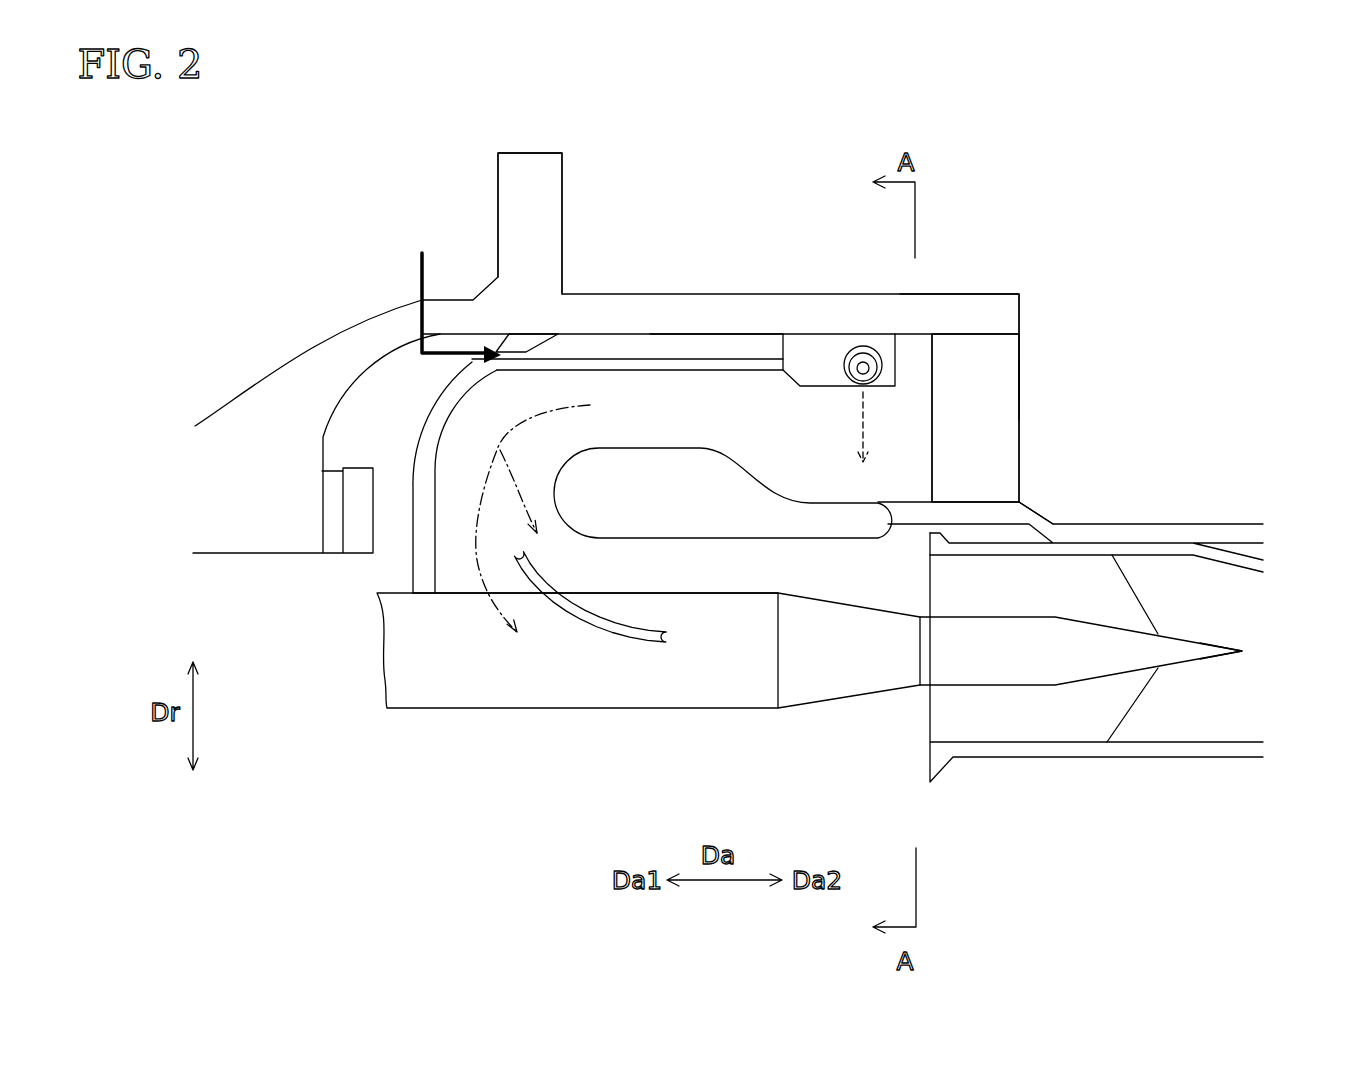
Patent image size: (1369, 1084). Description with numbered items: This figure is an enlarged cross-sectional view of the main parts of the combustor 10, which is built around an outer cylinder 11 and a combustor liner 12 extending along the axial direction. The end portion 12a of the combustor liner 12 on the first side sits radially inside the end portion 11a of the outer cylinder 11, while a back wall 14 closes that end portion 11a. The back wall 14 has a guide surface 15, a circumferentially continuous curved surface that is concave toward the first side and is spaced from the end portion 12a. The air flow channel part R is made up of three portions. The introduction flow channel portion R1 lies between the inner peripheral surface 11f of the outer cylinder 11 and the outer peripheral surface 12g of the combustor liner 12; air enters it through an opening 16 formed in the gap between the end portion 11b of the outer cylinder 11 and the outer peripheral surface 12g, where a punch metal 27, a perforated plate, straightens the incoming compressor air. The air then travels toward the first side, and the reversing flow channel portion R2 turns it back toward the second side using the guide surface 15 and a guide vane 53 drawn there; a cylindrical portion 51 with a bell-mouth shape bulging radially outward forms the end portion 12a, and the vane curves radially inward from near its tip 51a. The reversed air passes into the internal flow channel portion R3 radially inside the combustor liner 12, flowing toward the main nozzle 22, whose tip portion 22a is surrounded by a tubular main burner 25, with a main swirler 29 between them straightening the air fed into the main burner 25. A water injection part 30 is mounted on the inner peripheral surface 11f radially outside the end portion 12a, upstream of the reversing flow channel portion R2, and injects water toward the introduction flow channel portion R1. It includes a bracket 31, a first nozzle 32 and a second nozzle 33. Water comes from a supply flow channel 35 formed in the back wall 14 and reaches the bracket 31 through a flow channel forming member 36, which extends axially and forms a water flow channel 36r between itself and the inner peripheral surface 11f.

The combustor 10 is at (343, 232).
The outer cylinder 11 is at (697, 294).
The end portion of the outer cylinder on the first side 11a is at (575, 293).
The end portion of the outer cylinder on the second side 11b is at (1017, 295).
The inner peripheral surface of the outer cylinder 11f is at (743, 337).
The combustor liner 12 is at (1201, 523).
The end portion of the combustor liner on the first side 12a is at (550, 484).
The outer peripheral surface of the combustor liner 12g is at (1027, 501).
The back wall 14 is at (413, 428).
The guide surface 15 is at (465, 425).
The opening 16 is at (1002, 350).
The main nozzle 22 is at (735, 712).
The tip portion of the main nozzle 22a is at (1243, 652).
The main burner 25 is at (1178, 758).
The punch metal 27 is at (1020, 387).
The main swirler 29 is at (1117, 713).
The water injection part 30 is at (789, 389).
The bracket 31 is at (823, 334).
The first nozzle 32 is at (873, 352).
The second nozzle 33 is at (946, 309).
The supply flow channel 35 is at (450, 353).
The flow channel forming member 36 is at (605, 375).
The water flow channel 36r is at (672, 348).
The cylindrical portion 51 is at (725, 542).
The tip of the cylindrical portion 51a is at (553, 488).
The guide vane 53 is at (577, 618).
The air flow channel part R is at (634, 396).
The introduction flow channel portion R1 is at (910, 418).
The reversing flow channel portion R2 is at (460, 480).
The internal flow channel portion R3 is at (863, 722).